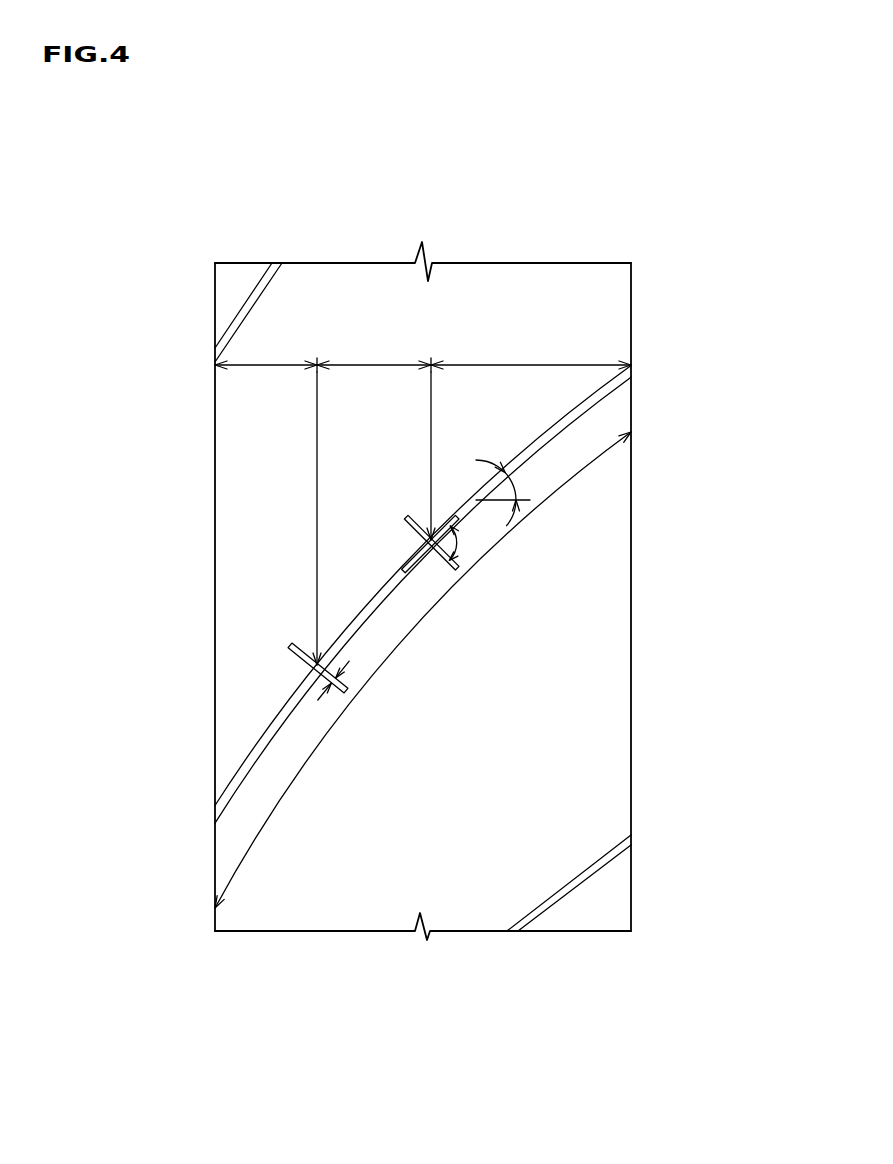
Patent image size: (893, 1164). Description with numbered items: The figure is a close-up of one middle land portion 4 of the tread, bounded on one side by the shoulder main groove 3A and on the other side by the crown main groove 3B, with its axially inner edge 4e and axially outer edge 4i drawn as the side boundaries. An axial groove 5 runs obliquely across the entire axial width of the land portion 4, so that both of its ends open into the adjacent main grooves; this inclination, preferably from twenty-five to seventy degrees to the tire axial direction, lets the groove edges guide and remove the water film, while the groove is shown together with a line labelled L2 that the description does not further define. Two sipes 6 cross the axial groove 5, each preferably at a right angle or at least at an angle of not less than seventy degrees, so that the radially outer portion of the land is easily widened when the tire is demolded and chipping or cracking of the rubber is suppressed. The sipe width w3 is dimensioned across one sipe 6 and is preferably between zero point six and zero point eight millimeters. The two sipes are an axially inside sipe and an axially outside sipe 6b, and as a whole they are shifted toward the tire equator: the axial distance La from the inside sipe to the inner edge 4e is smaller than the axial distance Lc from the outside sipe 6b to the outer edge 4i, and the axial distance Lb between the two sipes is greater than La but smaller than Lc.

The land portion 4 is at (487, 308).
The axially inner edge of the land portion 4e is at (213, 862).
The axially outer edge of the land portion 4i is at (632, 888).
The shoulder main groove 3A is at (736, 455).
The crown main groove 3B is at (121, 455).
The axial groove 5 is at (598, 398).
The reference line L2 is at (577, 472).
The axial distance between inside sipe and inner edge La is at (263, 363).
The axial distance between the sipes Lb is at (373, 364).
The axial distance between outside sipe and outer edge Lc is at (533, 363).
The sipe 6 is at (297, 657).
The axially outside sipe 6b is at (437, 560).
The width of the sipe w3 is at (340, 700).